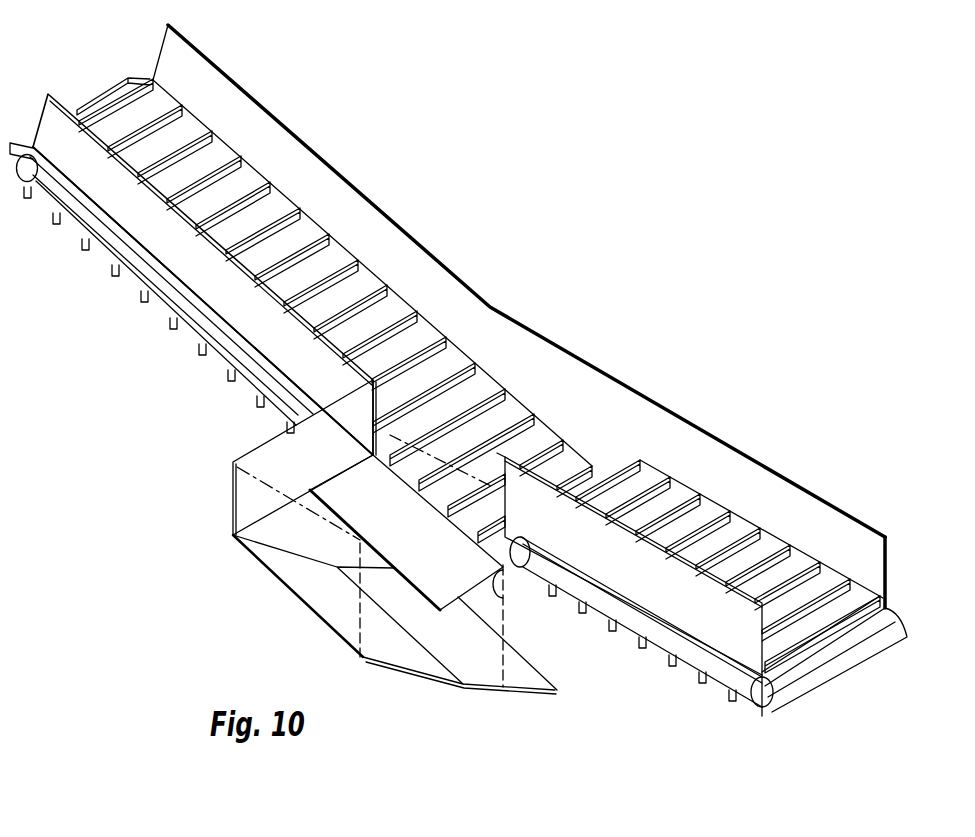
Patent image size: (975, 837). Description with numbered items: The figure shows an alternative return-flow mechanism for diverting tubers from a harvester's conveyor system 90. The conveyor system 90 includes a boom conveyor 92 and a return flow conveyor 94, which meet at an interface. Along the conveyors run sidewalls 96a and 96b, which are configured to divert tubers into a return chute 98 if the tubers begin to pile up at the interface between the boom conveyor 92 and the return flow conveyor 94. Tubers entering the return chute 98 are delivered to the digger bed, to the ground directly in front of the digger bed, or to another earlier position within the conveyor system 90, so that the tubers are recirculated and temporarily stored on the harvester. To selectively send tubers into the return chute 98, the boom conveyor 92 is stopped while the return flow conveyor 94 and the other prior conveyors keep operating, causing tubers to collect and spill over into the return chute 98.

The conveyor system 90 is at (600, 177).
The boom conveyor 92 is at (307, 230).
The return flow conveyor 94 is at (725, 533).
The sidewall 96a is at (543, 335).
The sidewall 96b is at (298, 315).
The return chute 98 is at (230, 508).